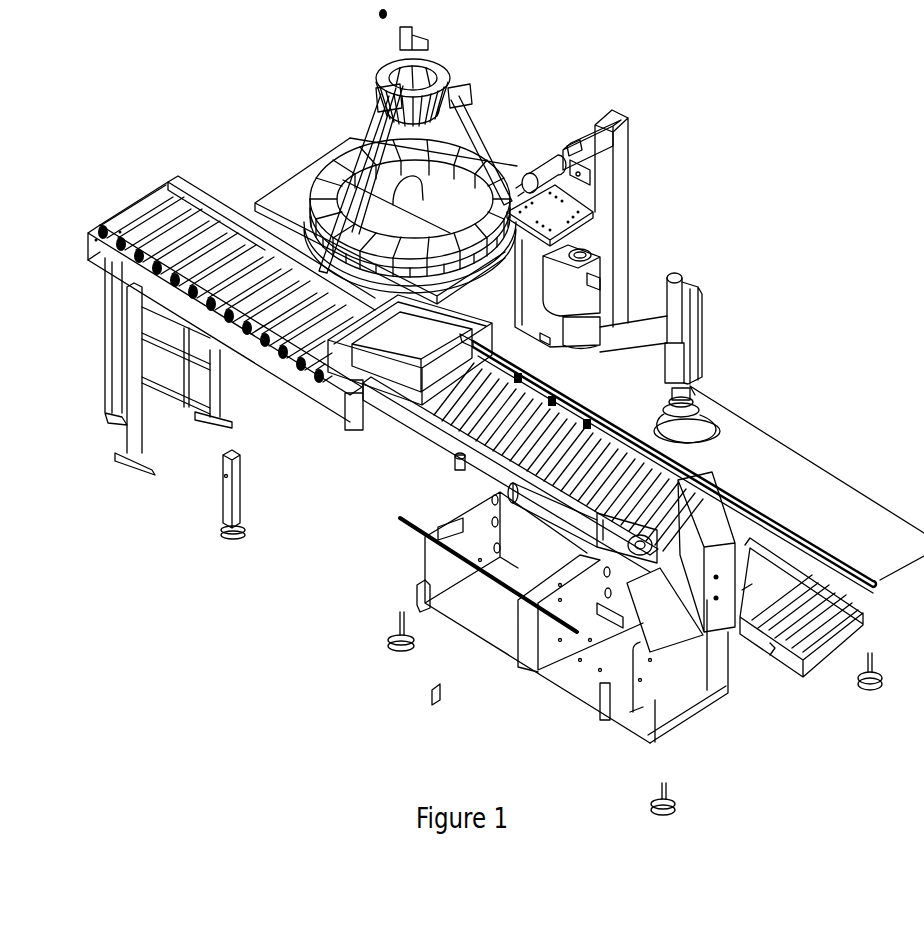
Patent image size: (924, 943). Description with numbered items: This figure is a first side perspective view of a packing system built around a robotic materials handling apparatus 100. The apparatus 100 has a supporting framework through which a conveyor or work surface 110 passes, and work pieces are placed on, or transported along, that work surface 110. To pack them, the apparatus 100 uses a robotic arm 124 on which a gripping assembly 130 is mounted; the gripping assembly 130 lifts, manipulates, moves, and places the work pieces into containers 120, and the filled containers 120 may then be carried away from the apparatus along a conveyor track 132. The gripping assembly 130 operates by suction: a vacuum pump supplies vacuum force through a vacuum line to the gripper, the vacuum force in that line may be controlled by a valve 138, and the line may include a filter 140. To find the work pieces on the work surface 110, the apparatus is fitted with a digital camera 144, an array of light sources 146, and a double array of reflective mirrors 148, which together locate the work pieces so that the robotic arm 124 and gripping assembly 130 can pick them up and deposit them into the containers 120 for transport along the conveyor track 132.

The robotic materials handling apparatus 100 is at (833, 152).
The work surface 110 is at (833, 503).
The container 120 is at (412, 383).
The robotic arm 124 is at (716, 286).
The gripping assembly 130 is at (718, 413).
The conveyor track 132 is at (121, 191).
The valve 138 is at (624, 161).
The filter 140 is at (541, 160).
The digital camera 144 is at (447, 35).
The array of light sources 146 is at (467, 97).
The double array of reflective mirrors 148 is at (305, 173).